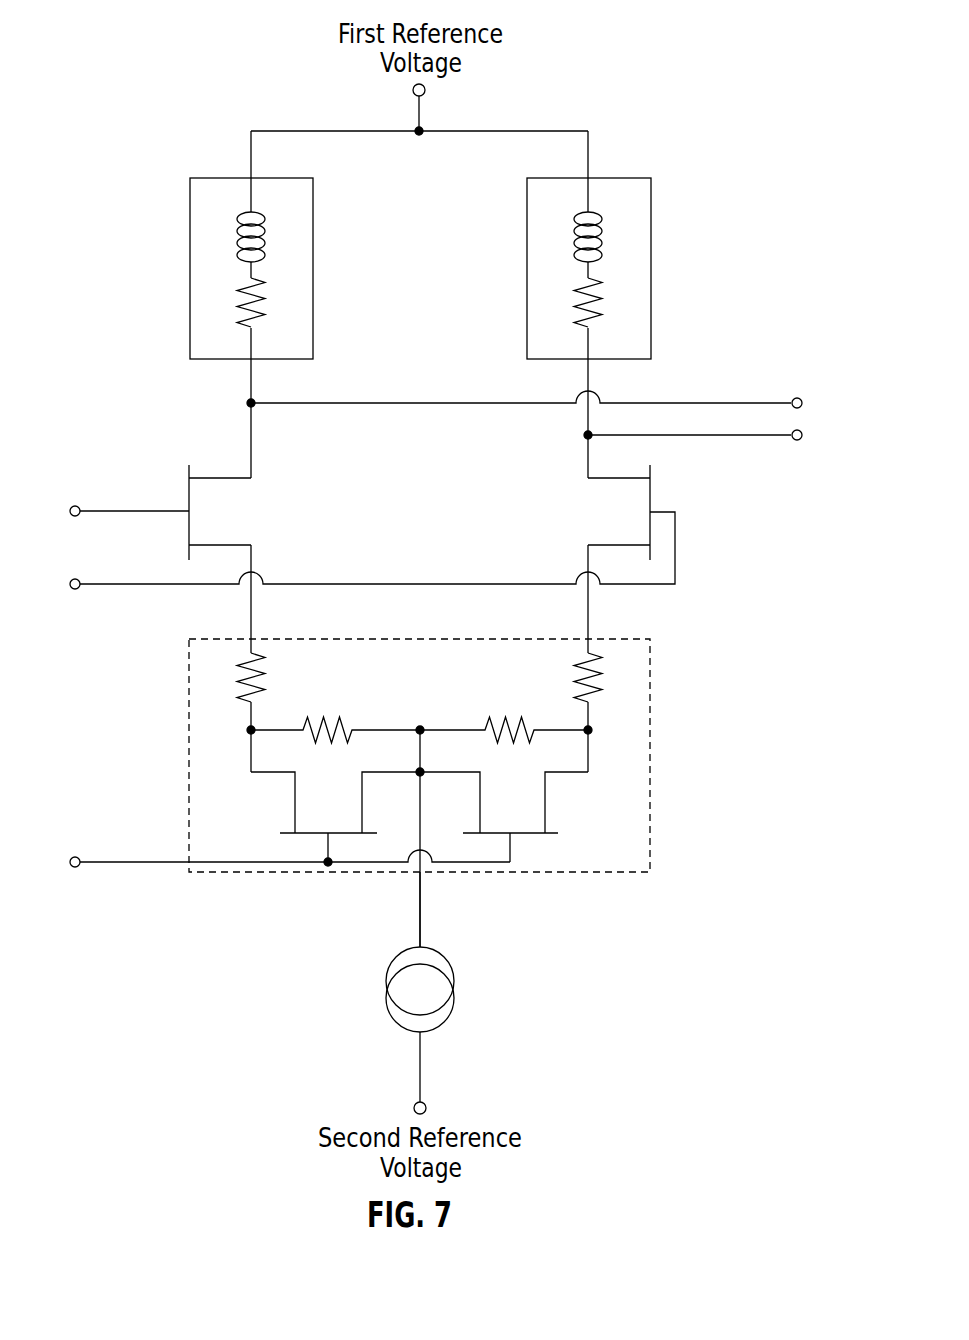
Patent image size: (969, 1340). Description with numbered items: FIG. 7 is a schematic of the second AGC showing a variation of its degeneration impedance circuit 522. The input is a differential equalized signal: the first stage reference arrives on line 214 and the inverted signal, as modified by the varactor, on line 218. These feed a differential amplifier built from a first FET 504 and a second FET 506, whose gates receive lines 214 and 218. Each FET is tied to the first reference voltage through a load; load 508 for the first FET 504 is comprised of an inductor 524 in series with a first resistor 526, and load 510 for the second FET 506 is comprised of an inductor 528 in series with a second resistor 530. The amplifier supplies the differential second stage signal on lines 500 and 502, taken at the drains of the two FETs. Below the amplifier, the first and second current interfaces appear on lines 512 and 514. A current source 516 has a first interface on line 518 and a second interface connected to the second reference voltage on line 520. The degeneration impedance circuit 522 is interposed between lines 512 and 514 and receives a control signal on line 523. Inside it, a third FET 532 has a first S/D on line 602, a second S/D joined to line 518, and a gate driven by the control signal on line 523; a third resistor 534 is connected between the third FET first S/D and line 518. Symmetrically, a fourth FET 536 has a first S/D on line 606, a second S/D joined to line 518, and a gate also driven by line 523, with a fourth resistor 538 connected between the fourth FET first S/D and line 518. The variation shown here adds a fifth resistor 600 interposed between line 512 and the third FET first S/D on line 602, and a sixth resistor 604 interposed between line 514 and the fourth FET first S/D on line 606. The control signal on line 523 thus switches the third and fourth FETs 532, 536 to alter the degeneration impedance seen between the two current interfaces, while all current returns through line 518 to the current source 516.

The line carrying first stage reference 214 is at (128, 515).
The line carrying inverted signal 218 is at (128, 589).
The line for differential second stage signal 500 is at (251, 442).
The line for differential second stage signal 502 is at (588, 468).
The first FET 504 is at (255, 517).
The second FET 506 is at (564, 517).
The load 508 is at (190, 268).
The load 510 is at (651, 268).
The line for first current interface 512 is at (251, 625).
The line for second current interface 514 is at (588, 625).
The current source 516 is at (386, 998).
The line for current source first interface 518 is at (420, 913).
The line for second reference voltage 520 is at (420, 1074).
The degeneration impedance circuit 522 is at (650, 782).
The line for control signal 523 is at (128, 866).
The inductor 524 is at (265, 232).
The first resistor 526 is at (265, 298).
The inductor 528 is at (574, 232).
The second resistor 530 is at (574, 298).
The third FET 532 is at (295, 810).
The third resistor 534 is at (315, 725).
The fourth FET 536 is at (548, 808).
The fourth resistor 538 is at (522, 725).
The fifth resistor 600 is at (265, 677).
The line for third FET first S/D 602 is at (251, 715).
The sixth resistor 604 is at (575, 685).
The line for fourth FET first S/D 606 is at (588, 715).